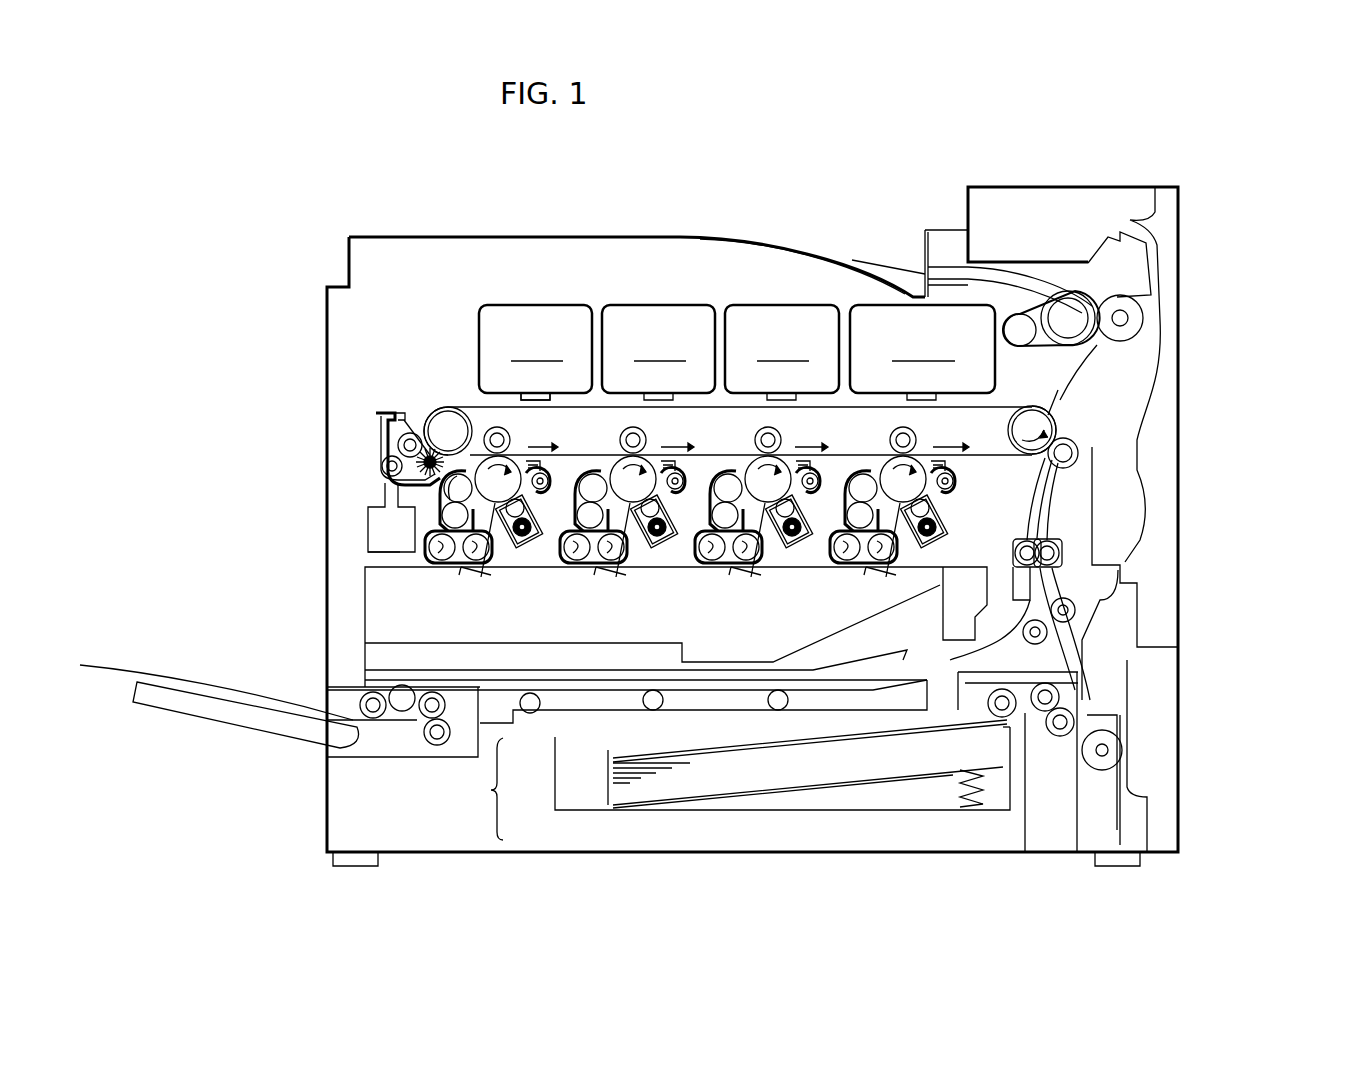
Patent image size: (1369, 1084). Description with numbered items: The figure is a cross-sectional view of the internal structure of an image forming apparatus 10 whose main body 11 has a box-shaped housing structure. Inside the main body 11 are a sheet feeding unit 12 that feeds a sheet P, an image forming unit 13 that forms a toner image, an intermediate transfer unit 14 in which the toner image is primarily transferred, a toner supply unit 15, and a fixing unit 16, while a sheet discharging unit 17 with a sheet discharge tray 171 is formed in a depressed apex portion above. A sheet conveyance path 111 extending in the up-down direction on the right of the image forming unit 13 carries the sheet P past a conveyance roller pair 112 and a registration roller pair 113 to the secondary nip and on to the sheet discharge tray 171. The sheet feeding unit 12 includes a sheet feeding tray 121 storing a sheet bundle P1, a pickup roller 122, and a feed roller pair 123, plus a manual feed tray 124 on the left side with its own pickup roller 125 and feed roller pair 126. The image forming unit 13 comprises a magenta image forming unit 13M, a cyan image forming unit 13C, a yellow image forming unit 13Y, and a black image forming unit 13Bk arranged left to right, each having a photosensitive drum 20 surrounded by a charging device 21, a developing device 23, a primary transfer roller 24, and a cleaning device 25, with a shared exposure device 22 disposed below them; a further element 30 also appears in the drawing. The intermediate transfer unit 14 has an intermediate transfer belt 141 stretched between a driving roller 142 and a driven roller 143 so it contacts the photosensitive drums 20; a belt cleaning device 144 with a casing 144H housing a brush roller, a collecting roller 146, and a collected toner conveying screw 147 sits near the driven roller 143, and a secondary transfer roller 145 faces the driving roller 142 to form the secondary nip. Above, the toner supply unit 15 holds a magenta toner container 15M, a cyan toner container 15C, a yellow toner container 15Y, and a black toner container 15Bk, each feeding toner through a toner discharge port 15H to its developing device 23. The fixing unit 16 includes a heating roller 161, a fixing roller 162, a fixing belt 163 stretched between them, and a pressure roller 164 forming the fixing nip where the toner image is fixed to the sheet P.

The image forming apparatus 10 is at (376, 234).
The main body 11 is at (327, 480).
The sheet feeding unit 12 is at (318, 800).
The image forming unit 13 is at (362, 535).
The magenta image forming unit 13M is at (485, 590).
The cyan image forming unit 13C is at (615, 590).
The yellow image forming unit 13Y is at (748, 590).
The black image forming unit 13Bk is at (865, 590).
The intermediate transfer unit 14 is at (396, 420).
The toner supply unit 15 is at (452, 330).
The magenta toner container 15M is at (535, 352).
The cyan toner container 15C is at (658, 352).
The yellow toner container 15Y is at (782, 352).
The black toner container 15Bk is at (922, 352).
The toner discharge port 15H is at (545, 402).
The fixing unit 16 is at (1275, 328).
The sheet discharging unit 17 is at (780, 234).
The sheet discharge tray 171 is at (808, 260).
The sheet P is at (880, 262).
The sheet bundle P1 is at (479, 789).
The photosensitive drum 20 is at (443, 415).
The charging device 21 is at (500, 544).
The exposure device 22 is at (363, 612).
The developing device 23 is at (440, 500).
The primary transfer roller 24 is at (511, 440).
The cleaning device 25 is at (526, 553).
The exposure device 30 is at (362, 524).
The sheet conveyance path 111 is at (1056, 268).
The conveyance roller pair 112 is at (1084, 615).
The registration roller pair 113 is at (1072, 553).
The sheet feeding tray 121 is at (657, 818).
The pickup roller 122 is at (968, 704).
The feed roller pair 123 is at (1060, 737).
The manual feed tray 124 is at (322, 738).
The pickup roller 125 is at (370, 700).
The feed roller pair 126 is at (435, 746).
The intermediate transfer belt 141 is at (980, 458).
The driving roller 142 is at (1006, 427).
The driven roller 143 is at (405, 413).
The belt cleaning device 144 is at (366, 448).
The casing 144H is at (378, 437).
The secondary transfer roller 145 is at (1078, 455).
The collecting roller 146 is at (372, 430).
The collected toner conveying screw 147 is at (384, 468).
The heating roller 161 is at (1062, 353).
The fixing roller 162 is at (1078, 337).
The fixing belt 163 is at (1030, 347).
The pressure roller 164 is at (1143, 318).